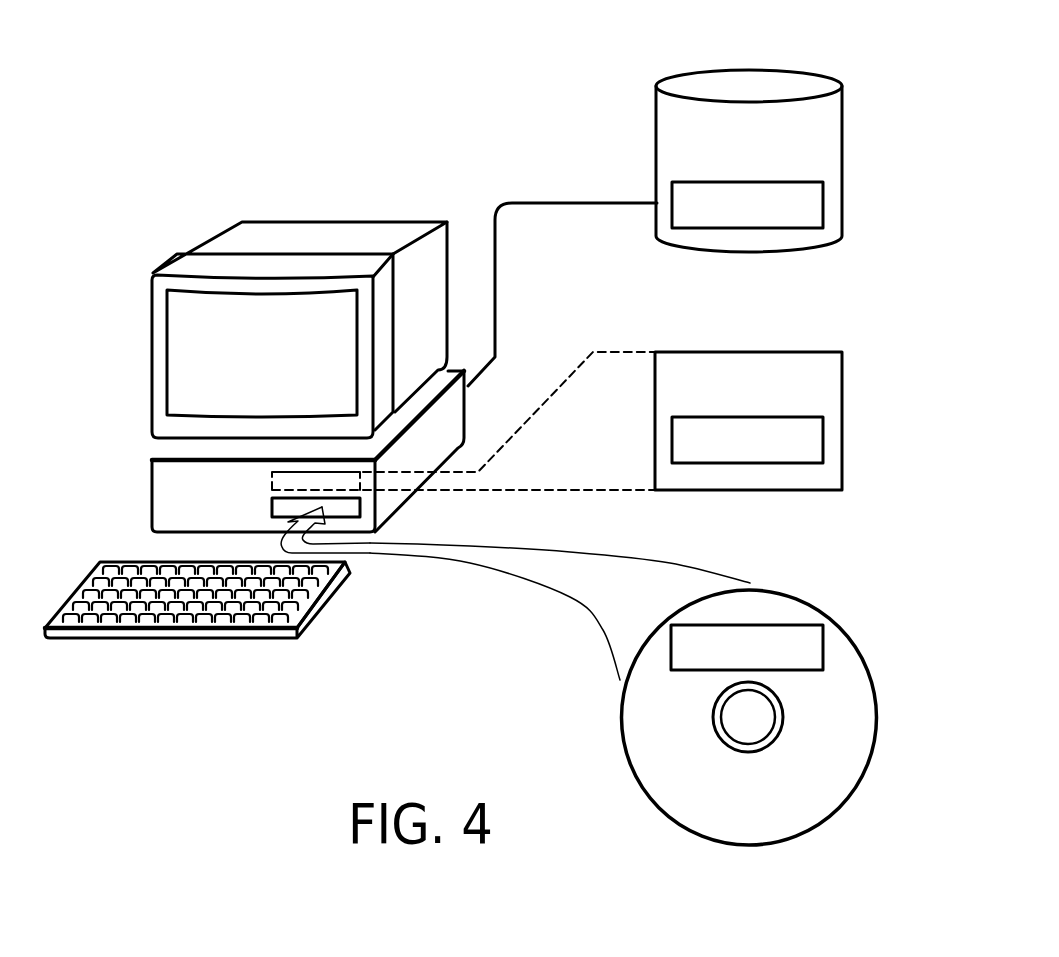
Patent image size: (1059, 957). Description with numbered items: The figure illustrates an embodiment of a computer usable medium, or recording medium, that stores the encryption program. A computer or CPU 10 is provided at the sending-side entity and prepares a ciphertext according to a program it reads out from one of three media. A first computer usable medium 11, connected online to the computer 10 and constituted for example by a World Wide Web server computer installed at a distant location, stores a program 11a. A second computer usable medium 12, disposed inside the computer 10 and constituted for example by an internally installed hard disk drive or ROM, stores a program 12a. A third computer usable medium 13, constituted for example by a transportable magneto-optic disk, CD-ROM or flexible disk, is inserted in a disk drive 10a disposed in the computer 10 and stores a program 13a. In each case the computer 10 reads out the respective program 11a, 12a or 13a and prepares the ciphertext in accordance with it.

The computer 10 is at (297, 227).
The disk drive 10a is at (272, 503).
The first computer usable medium 11 is at (716, 70).
The program 11a is at (757, 182).
The second computer usable medium 12 is at (708, 352).
The program 12a is at (757, 417).
The third computer usable medium 13 is at (795, 595).
The program 13a is at (803, 677).